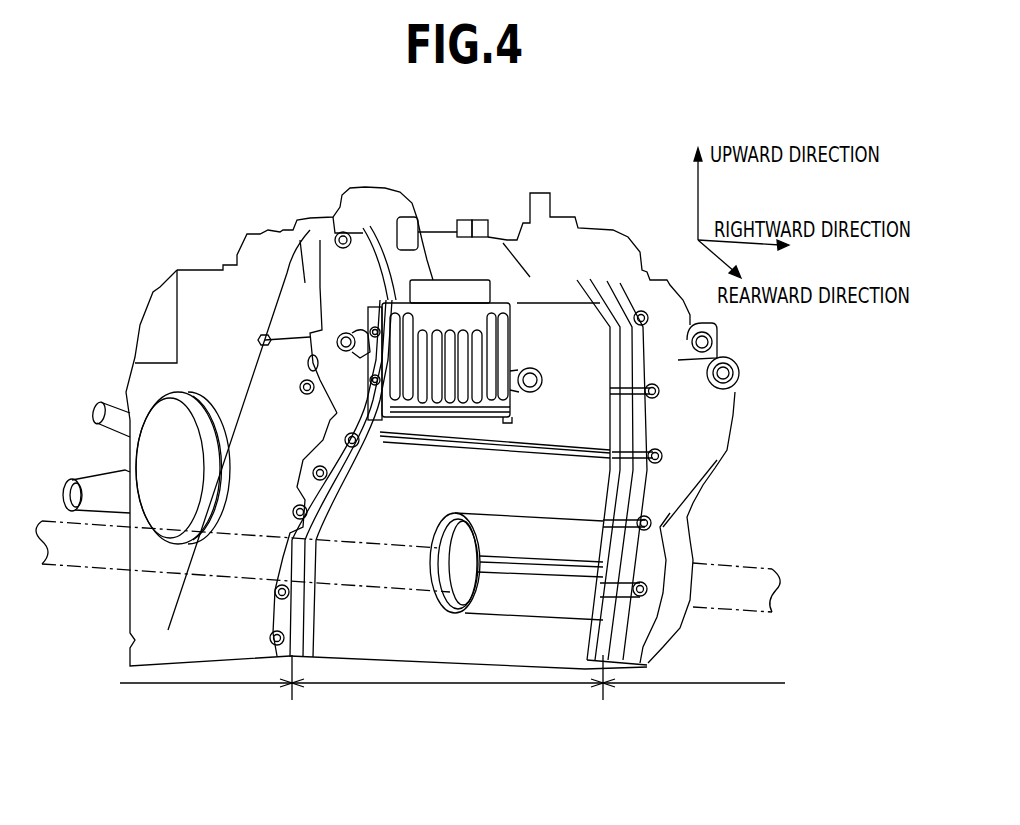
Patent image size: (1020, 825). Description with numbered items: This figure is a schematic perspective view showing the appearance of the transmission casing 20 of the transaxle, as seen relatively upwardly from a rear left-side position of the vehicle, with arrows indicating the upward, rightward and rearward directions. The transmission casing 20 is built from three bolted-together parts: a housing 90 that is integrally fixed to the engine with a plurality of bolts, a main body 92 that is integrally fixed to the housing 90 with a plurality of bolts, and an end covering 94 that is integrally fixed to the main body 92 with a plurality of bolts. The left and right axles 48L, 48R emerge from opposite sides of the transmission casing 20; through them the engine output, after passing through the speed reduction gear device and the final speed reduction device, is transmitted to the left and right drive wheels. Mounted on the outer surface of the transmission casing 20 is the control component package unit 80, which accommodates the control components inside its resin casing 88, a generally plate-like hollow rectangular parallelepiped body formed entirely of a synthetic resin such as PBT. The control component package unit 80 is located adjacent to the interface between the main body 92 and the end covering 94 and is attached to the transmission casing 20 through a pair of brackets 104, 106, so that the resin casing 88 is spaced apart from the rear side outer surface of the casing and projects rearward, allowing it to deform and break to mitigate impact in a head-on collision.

The transmission casing 20 is at (194, 203).
The left axle 48L is at (60, 553).
The right axle 48R is at (740, 600).
The control component package unit 80 is at (462, 268).
The resin casing 88 is at (430, 318).
The housing 90 is at (658, 496).
The main body 92 is at (480, 431).
The end covering 94 is at (186, 465).
The bracket 104 is at (356, 336).
The bracket 106 is at (517, 373).